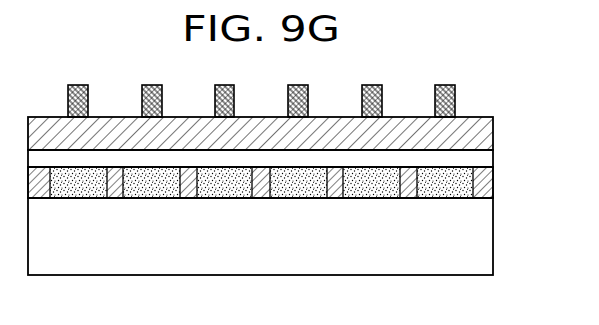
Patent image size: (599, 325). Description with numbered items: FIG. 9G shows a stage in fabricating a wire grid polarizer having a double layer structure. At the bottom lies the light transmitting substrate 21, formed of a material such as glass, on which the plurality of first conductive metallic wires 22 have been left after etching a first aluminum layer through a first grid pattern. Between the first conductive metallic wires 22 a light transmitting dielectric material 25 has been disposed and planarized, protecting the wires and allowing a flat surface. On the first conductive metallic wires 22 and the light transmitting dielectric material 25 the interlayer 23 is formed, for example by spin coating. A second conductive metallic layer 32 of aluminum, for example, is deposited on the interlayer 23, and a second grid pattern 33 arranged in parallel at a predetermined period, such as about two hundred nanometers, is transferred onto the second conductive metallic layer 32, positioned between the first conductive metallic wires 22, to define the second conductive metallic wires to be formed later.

The light transmitting substrate 21 is at (493, 238).
The first conductive metallic wires 22 is at (493, 183).
The interlayer 23 is at (493, 158).
The light transmitting dielectric material 25 is at (438, 198).
The second conductive metallic layer 32 is at (493, 130).
The second grid pattern 33 is at (455, 104).